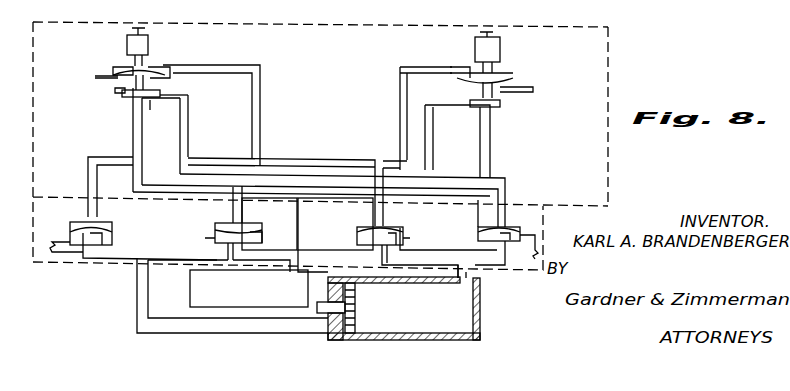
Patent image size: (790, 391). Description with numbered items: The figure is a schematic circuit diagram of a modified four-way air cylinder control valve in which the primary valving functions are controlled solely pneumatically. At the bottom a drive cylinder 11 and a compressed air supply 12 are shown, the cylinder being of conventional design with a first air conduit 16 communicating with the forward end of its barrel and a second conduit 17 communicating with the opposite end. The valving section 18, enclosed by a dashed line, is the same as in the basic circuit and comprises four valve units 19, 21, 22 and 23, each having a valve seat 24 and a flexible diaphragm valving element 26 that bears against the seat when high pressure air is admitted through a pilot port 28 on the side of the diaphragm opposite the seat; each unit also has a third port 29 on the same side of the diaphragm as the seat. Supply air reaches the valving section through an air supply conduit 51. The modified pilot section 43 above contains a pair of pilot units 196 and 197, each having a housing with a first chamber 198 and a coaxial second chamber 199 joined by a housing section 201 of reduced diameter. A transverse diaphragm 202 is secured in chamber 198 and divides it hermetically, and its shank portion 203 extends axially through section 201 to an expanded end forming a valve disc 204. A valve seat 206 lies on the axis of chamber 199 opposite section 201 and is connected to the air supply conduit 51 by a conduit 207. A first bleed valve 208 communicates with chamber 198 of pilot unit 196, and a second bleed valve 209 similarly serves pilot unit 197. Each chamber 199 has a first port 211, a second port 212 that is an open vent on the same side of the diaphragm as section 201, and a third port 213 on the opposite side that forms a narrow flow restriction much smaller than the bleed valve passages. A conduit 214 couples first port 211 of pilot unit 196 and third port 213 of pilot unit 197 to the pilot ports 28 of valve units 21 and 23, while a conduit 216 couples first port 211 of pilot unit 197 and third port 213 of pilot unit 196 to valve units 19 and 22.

The cylinder 11 is at (489, 306).
The compressed air supply 12 is at (190, 284).
The first air conduit 16 is at (137, 288).
The second conduit 17 is at (470, 270).
The valving section 18 is at (592, 190).
The valve unit 19 is at (290, 217).
The valve unit 21 is at (265, 218).
The valve unit 22 is at (397, 214).
The valve unit 23 is at (518, 219).
The valve seat 24 is at (102, 241).
The valving element 26 is at (110, 228).
The pilot port 28 is at (88, 214).
The third port 29 is at (72, 236).
The pilot section 43 is at (607, 171).
The air supply conduit 51 is at (293, 228).
The pilot unit 196 is at (143, 109).
The pilot unit 197 is at (465, 105).
The first chamber 198 is at (113, 70).
The second chamber 199 is at (137, 100).
The housing section 201 is at (165, 88).
The diaphragm 202 is at (165, 77).
The shank portion 203 is at (122, 93).
The valve disc 204 is at (130, 97).
The valve seat 206 is at (141, 146).
The conduit 207 is at (172, 185).
The first bleed valve 208 is at (130, 35).
The second bleed valve 209 is at (500, 44).
The first port 211 is at (150, 108).
The second port 212 is at (90, 83).
The third port 213 is at (165, 66).
The conduit 214 is at (470, 174).
The conduit 216 is at (232, 152).